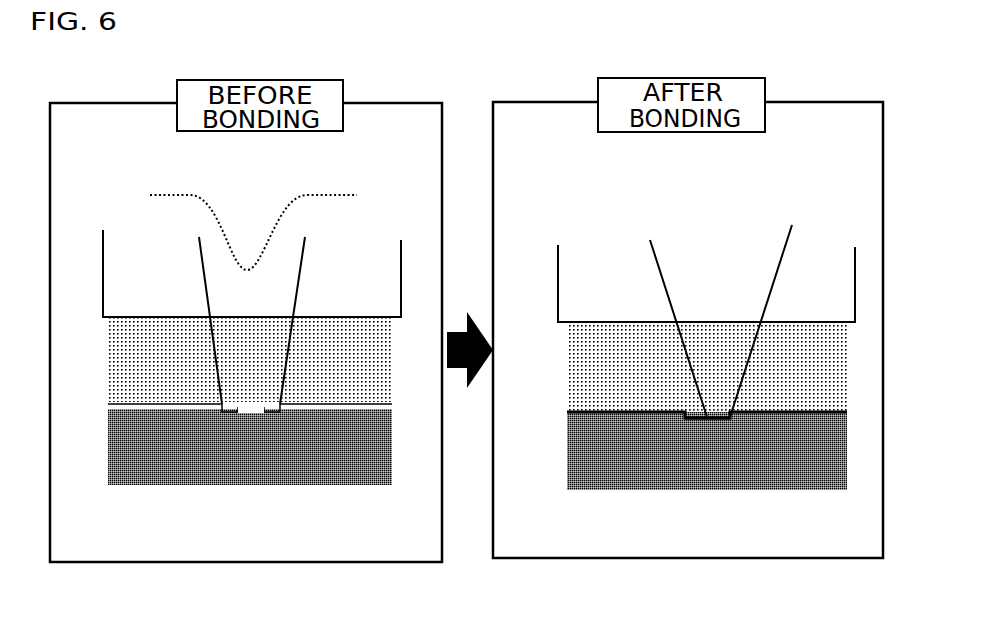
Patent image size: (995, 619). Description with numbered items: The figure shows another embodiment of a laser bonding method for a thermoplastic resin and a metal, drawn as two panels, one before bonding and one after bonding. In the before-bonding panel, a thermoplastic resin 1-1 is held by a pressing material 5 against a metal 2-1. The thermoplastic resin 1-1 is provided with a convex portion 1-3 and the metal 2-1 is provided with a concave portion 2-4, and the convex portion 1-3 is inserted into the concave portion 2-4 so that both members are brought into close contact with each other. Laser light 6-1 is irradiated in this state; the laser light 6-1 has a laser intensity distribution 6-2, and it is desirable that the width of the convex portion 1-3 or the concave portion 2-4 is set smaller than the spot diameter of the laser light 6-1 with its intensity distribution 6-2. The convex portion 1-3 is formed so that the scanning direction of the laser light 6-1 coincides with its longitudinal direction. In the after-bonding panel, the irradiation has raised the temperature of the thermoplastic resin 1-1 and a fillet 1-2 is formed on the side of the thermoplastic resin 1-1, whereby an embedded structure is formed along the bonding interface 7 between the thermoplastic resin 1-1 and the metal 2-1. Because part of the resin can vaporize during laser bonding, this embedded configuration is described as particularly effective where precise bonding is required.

The pressing material 5 is at (460, 241).
The thermoplastic resin 1-1 is at (450, 362).
The fillet 1-2 is at (723, 366).
The convex portion 1-3 is at (284, 479).
The metal 2-1 is at (481, 482).
The concave portion 2-4 is at (250, 480).
The laser light 6-1 is at (317, 288).
The laser intensity distribution 6-2 is at (280, 196).
The bonding interface 7 is at (705, 301).